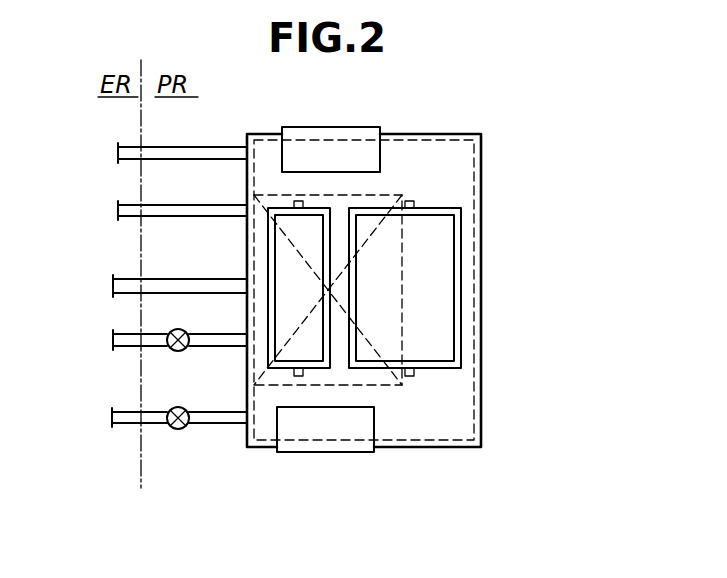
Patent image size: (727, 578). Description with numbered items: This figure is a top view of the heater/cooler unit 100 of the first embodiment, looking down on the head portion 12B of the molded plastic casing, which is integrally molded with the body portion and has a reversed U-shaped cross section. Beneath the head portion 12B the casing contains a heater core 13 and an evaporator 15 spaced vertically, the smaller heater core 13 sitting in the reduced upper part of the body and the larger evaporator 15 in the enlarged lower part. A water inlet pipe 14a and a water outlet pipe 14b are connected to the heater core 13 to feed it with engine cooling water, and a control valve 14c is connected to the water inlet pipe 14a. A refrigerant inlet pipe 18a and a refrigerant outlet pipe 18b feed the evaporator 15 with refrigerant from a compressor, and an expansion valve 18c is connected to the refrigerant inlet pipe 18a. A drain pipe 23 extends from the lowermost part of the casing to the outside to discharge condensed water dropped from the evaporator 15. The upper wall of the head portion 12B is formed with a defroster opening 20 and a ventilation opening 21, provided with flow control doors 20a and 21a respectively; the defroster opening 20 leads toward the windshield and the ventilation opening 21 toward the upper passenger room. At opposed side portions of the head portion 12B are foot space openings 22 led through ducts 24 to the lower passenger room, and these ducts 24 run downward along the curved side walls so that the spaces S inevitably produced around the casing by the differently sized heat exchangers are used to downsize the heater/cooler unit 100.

The heater/cooler unit 100 is at (660, 130).
The head portion 12B is at (500, 132).
The heater core 13 is at (483, 241).
The evaporator 15 is at (483, 206).
The defroster opening 20 is at (270, 243).
The flow control door 20a is at (283, 272).
The ventilation opening 21 is at (452, 283).
The flow control door 21a is at (437, 318).
The foot space opening 22 is at (332, 170).
The duct 24 is at (358, 127).
The water inlet pipe 14a is at (128, 342).
The water outlet pipe 14b is at (180, 205).
The control valve 14c is at (172, 332).
The refrigerant inlet pipe 18a is at (125, 418).
The refrigerant outlet pipe 18b is at (215, 147).
The expansion valve 18c is at (178, 431).
The drain pipe 23 is at (128, 277).
The space S is at (403, 167).